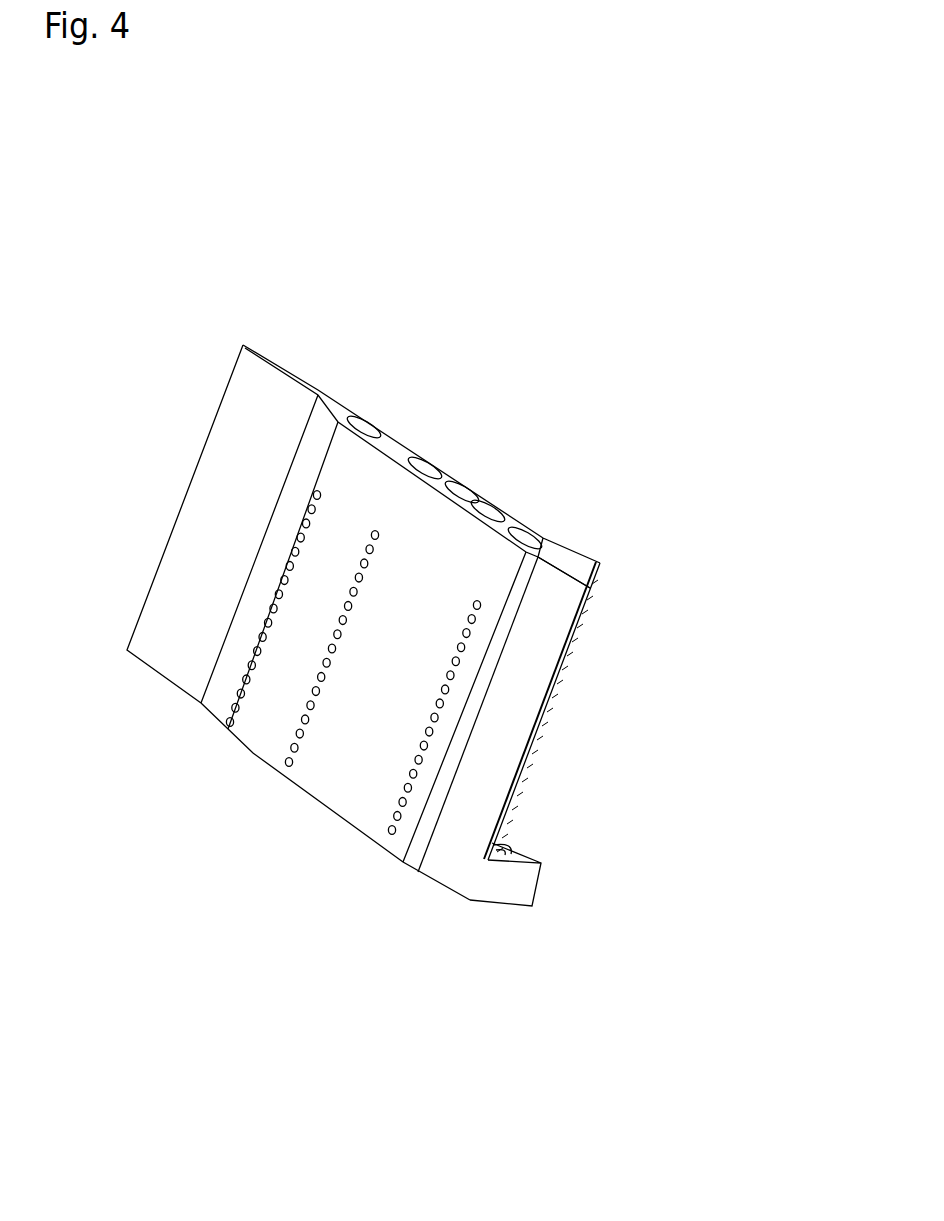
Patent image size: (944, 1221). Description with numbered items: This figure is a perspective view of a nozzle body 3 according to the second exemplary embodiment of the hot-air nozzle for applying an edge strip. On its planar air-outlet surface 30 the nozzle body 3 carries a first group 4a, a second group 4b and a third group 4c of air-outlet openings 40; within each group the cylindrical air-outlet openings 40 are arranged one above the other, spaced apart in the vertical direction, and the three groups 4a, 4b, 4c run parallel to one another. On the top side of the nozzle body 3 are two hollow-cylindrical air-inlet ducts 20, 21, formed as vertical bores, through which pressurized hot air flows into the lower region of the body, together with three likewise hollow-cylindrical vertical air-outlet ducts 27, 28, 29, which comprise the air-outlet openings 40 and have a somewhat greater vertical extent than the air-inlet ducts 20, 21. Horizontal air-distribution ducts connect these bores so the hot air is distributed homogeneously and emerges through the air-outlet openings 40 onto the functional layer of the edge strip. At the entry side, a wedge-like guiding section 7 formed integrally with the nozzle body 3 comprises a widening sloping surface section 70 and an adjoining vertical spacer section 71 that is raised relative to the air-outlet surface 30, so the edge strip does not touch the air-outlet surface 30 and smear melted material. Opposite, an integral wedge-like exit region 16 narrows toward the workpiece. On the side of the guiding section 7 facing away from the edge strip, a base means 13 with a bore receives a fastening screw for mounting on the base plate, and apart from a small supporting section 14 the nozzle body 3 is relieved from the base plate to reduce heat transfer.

The nozzle body 3 is at (425, 413).
The first group of air-outlet openings 4a is at (474, 603).
The second group of air-outlet openings 4b is at (318, 488).
The third group of air-outlet openings 4c is at (390, 526).
The guiding section 7 is at (503, 724).
The base means 13 is at (493, 885).
The supporting section 14 is at (253, 753).
The exit region 16 is at (222, 482).
The air-inlet duct 20 is at (462, 490).
The air-inlet duct 21 is at (488, 512).
The air-outlet duct 27 is at (363, 424).
The air-outlet duct 28 is at (428, 468).
The air-outlet duct 29 is at (527, 537).
The air-outlet surface 30 is at (418, 553).
The air-outlet openings 40 is at (260, 771).
The sloping surface section 70 is at (502, 786).
The spacer section 71 is at (423, 837).